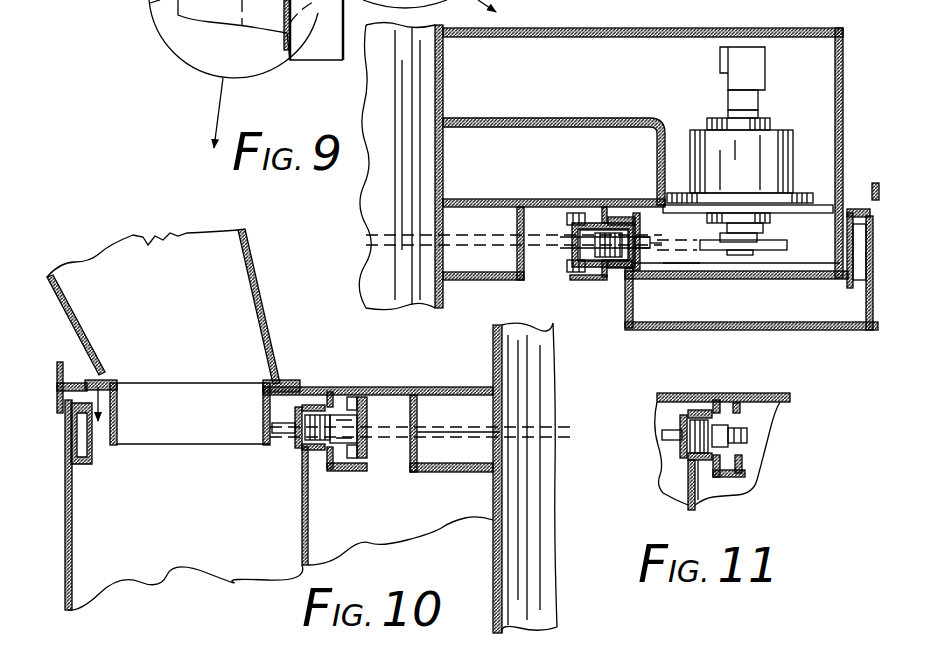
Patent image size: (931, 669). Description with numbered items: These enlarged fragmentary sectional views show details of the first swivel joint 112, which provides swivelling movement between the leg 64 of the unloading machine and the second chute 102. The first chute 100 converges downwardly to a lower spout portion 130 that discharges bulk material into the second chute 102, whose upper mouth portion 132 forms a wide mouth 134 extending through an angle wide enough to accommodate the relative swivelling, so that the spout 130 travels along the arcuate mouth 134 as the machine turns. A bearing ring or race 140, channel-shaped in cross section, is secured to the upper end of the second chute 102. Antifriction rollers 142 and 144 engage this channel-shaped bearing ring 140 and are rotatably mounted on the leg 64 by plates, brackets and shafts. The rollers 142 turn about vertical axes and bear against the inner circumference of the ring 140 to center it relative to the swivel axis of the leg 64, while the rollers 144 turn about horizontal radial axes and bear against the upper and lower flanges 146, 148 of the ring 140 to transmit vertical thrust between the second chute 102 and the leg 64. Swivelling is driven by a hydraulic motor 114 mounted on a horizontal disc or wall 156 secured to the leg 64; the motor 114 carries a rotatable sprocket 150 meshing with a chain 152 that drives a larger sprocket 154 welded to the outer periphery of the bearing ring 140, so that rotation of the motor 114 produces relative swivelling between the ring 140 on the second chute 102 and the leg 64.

In FIG. 9, the leg 64 is at (446, 66).
In FIG. 10, the leg 64 is at (489, 347).
In FIG. 10, the first chute 100 is at (80, 350).
In FIG. 9, the second chute 102 is at (170, 0).
In FIG. 10, the second chute 102 is at (60, 573).
In FIG. 9, the first swivel joint 112 is at (873, 252).
In FIG. 10, the first swivel joint 112 is at (60, 424).
In FIG. 9, the hydraulic motor 114 is at (795, 160).
In FIG. 10, the lower spout portion 130 is at (110, 450).
In FIG. 10, the upper mouth portion 132 is at (65, 513).
In FIG. 10, the mouth 134 is at (122, 310).
In FIG. 9, the bearing ring 140 is at (650, 228).
In FIG. 10, the bearing ring 140 is at (297, 443).
In FIG. 11, the bearing ring 140 is at (680, 445).
In FIG. 9, the antifriction roller elements 142 is at (626, 258).
In FIG. 10, the antifriction roller elements 142 is at (328, 415).
In FIG. 11, the antifriction roller elements 144 is at (698, 500).
In FIG. 9, the upper flange 146 is at (618, 216).
In FIG. 10, the upper flange 146 is at (312, 405).
In FIG. 11, the upper flange 146 is at (698, 410).
In FIG. 9, the lower flange 148 is at (620, 268).
In FIG. 10, the lower flange 148 is at (312, 455).
In FIG. 11, the lower flange 148 is at (703, 460).
In FIG. 9, the sprocket 150 is at (763, 250).
In FIG. 9, the chain 152 is at (686, 247).
In FIG. 10, the chain 152 is at (458, 423).
In FIG. 9, the larger sprocket 154 is at (652, 212).
In FIG. 10, the larger sprocket 154 is at (273, 418).
In FIG. 11, the larger sprocket 154 is at (680, 423).
In FIG. 9, the horizontal disc or wall 156 is at (458, 199).
In FIG. 10, the horizontal disc or wall 156 is at (295, 385).
In FIG. 11, the horizontal disc or wall 156 is at (767, 392).